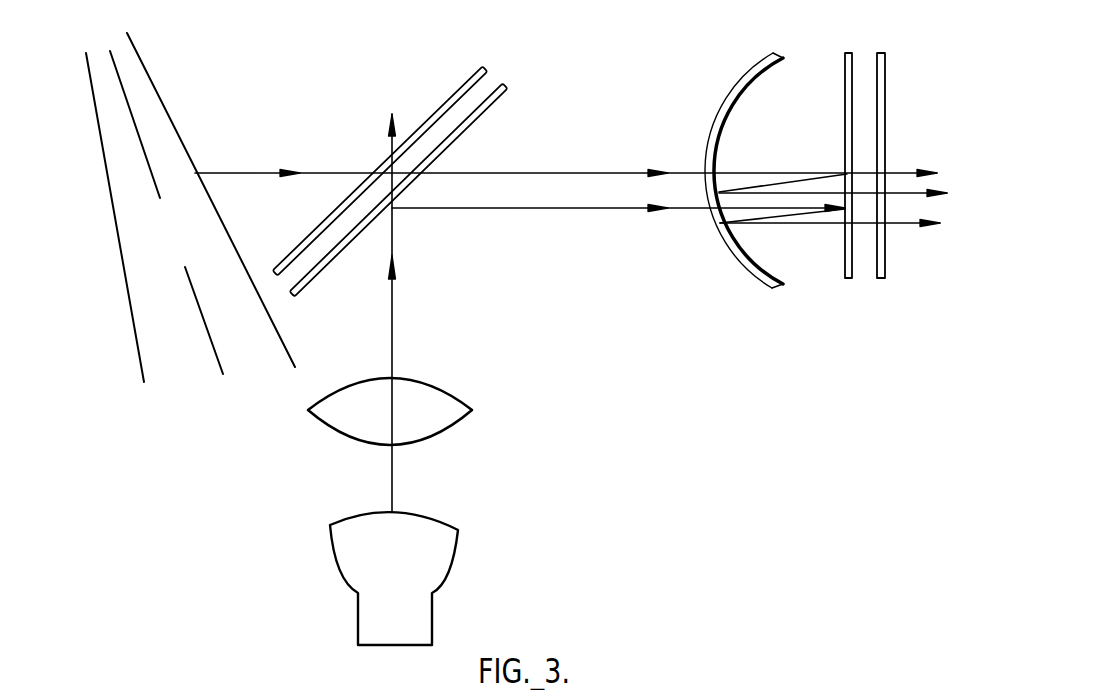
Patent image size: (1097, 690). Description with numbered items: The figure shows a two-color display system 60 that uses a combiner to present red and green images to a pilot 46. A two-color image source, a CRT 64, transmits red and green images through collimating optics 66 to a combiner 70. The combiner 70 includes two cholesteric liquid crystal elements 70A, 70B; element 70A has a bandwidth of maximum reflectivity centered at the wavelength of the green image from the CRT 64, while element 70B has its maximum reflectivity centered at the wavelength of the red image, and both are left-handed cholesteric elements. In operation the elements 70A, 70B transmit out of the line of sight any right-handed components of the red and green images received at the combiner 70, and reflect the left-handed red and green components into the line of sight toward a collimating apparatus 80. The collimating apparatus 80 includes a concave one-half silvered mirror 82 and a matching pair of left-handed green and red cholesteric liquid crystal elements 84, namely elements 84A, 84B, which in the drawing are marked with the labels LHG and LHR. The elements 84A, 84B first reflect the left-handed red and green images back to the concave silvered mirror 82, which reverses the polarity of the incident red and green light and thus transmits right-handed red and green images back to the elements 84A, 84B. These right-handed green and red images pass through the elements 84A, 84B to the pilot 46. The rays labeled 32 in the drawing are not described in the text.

The light beams / rays 32 is at (157, 96).
The combiner 70 is at (441, 90).
The cholesteric liquid crystal element 70A is at (493, 100).
The cholesteric liquid crystal element 70B is at (488, 75).
The display system 60 is at (262, 548).
The CRT 64 is at (452, 531).
The collimating optics 66 is at (457, 394).
The collimating apparatus 80 is at (859, 328).
The concave one-half silvered mirror 82 is at (753, 67).
The matching pair of cholesteric liquid crystal elements 84 is at (880, 32).
The cholesteric liquid crystal element 84A is at (886, 81).
The cholesteric liquid crystal element 84B is at (845, 81).
The LHR layer LHR is at (845, 267).
The LHG layer LHG is at (887, 265).
The pilot 46 is at (966, 184).